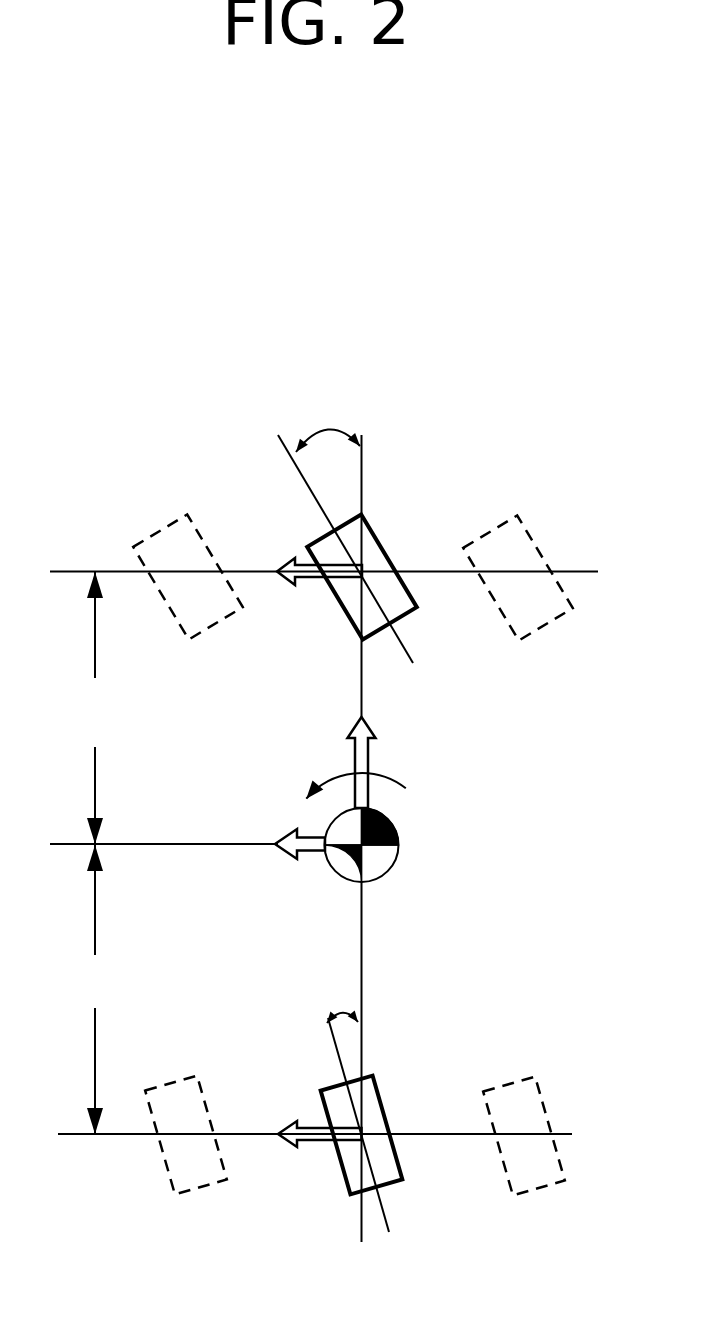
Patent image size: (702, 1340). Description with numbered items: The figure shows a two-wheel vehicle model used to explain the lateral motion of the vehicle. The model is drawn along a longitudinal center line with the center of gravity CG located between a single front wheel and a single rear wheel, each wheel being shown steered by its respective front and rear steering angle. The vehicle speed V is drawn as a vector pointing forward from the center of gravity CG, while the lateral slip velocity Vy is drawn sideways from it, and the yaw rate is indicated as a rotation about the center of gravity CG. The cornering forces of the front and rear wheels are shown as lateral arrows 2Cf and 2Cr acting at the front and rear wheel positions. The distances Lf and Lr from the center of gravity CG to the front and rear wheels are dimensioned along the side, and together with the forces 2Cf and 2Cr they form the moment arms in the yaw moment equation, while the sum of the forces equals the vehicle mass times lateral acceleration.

The center of gravity CG is at (405, 847).
The vehicle speed V is at (383, 748).
The lateral slip velocity Vy is at (305, 869).
The cornering force of the front wheels 2Cf is at (307, 600).
The cornering force of the rear wheels 2Cr is at (310, 1163).
The distance from the center of gravity to the front wheels Lf is at (89, 708).
The distance from the center of gravity to the rear wheels Lr is at (102, 989).